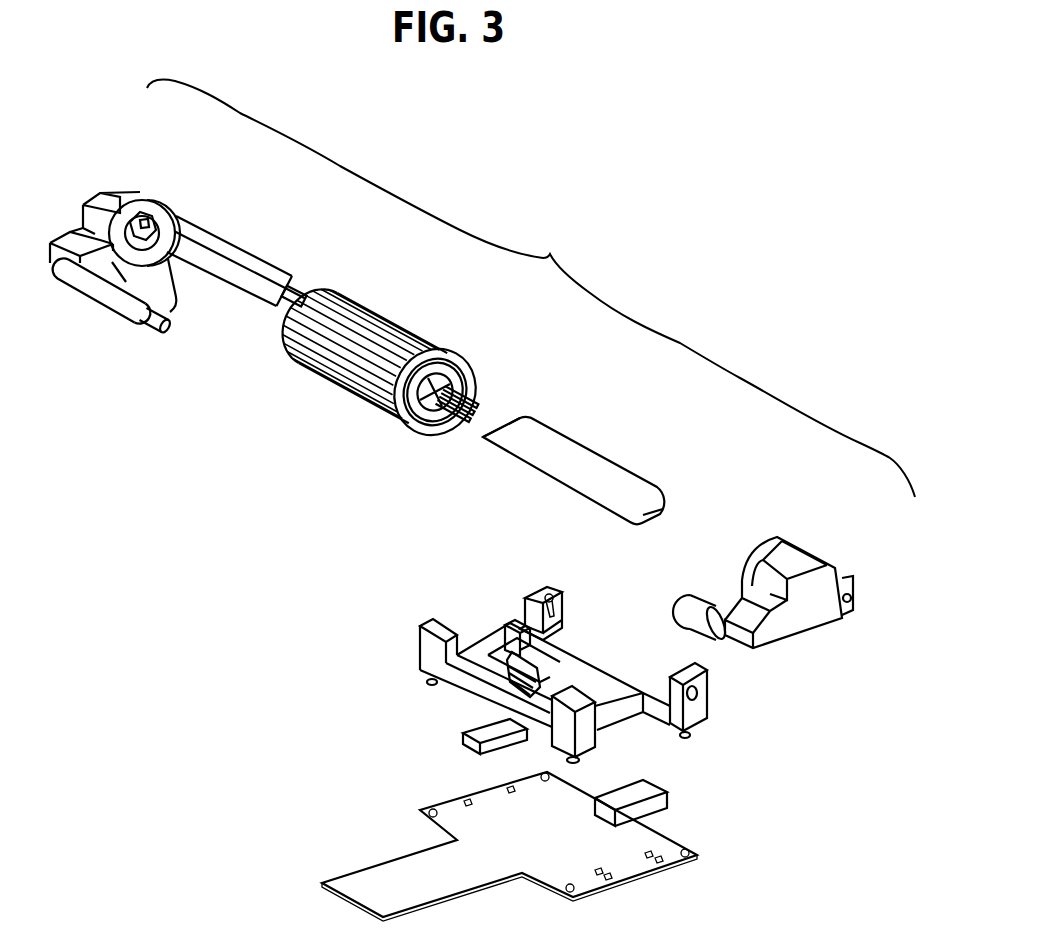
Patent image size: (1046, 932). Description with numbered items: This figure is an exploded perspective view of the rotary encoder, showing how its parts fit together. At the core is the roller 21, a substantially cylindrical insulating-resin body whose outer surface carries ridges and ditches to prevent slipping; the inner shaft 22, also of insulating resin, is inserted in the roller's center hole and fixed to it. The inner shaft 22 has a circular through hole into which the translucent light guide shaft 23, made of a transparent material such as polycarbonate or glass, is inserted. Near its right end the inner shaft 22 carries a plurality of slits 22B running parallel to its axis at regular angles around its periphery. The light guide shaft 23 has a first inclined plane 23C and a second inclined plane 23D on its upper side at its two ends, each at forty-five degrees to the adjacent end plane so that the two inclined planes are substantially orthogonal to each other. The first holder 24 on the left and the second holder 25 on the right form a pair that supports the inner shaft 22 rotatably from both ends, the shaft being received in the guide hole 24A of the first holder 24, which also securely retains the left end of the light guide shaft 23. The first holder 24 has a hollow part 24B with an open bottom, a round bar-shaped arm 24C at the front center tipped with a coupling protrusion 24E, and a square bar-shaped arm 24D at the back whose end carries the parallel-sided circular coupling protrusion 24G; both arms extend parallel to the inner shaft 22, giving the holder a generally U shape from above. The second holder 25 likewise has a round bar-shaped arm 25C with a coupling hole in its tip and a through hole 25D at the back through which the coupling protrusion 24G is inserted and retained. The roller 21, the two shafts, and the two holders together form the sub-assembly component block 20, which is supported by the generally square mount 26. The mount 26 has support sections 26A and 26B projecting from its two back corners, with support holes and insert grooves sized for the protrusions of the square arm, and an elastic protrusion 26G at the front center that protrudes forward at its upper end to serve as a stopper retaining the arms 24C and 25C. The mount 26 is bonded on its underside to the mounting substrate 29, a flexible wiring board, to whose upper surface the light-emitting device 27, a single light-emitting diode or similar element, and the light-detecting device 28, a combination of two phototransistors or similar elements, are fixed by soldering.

The sub-assembly component block 20 is at (531, 288).
The roller 21 is at (399, 364).
The inner shaft 22 is at (447, 352).
The slits 22B is at (396, 421).
The translucent light guide shaft 23 is at (595, 432).
The first inclined plane 23C is at (508, 426).
The second inclined plane 23D is at (641, 496).
The first holder 24 is at (201, 268).
The guide hole 24A is at (150, 223).
The hollow part 24B is at (146, 248).
The round bar-shaped arm 24C is at (103, 298).
The square bar-shaped arm 24D is at (236, 253).
The coupling protrusion 24E is at (150, 320).
The coupling protrusion 24G is at (295, 291).
The second holder 25 is at (794, 564).
The round bar-shaped arm 25C is at (702, 612).
The through hole 25D is at (855, 590).
The mount 26 is at (580, 651).
The support section 26A is at (540, 598).
The support section 26B is at (715, 683).
The elastic protrusion 26G is at (541, 674).
The light-emitting device 27 is at (465, 736).
The light-detecting device 28 is at (656, 805).
The mounting substrate 29 is at (497, 849).